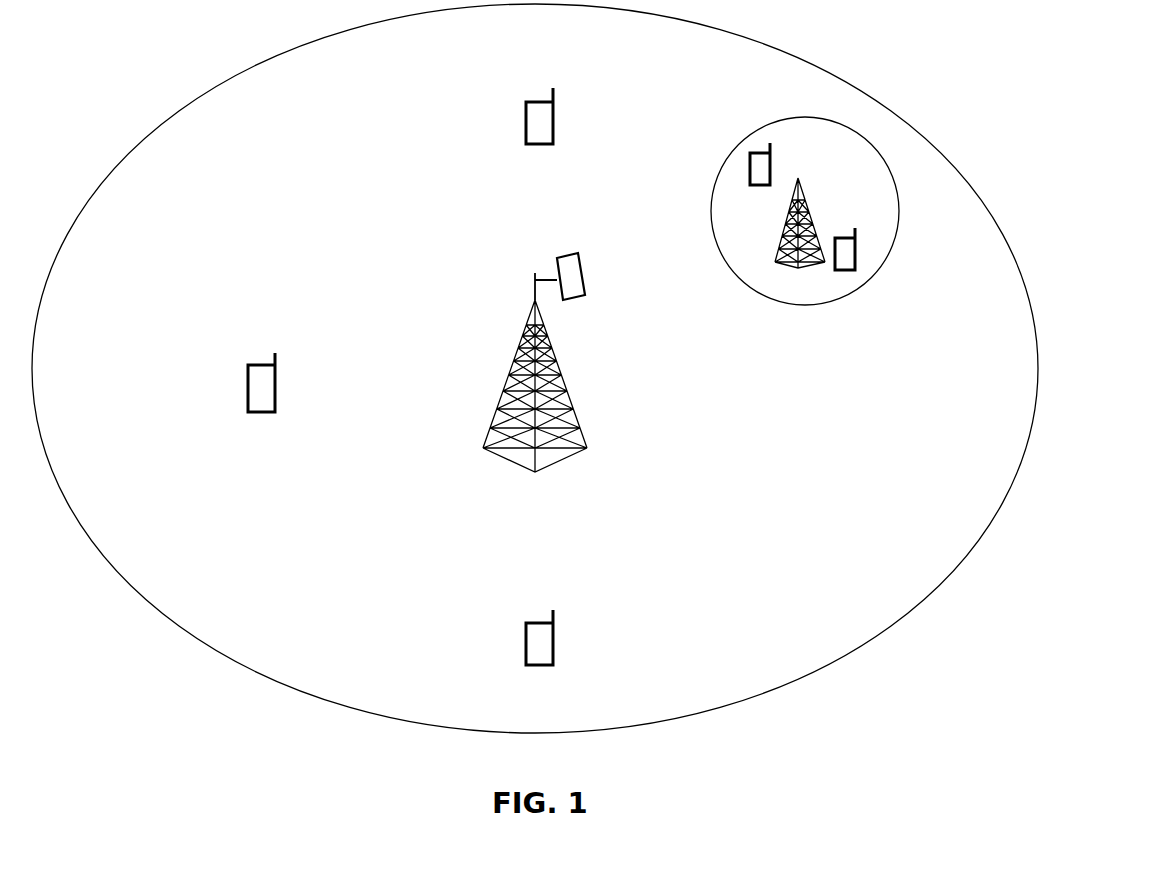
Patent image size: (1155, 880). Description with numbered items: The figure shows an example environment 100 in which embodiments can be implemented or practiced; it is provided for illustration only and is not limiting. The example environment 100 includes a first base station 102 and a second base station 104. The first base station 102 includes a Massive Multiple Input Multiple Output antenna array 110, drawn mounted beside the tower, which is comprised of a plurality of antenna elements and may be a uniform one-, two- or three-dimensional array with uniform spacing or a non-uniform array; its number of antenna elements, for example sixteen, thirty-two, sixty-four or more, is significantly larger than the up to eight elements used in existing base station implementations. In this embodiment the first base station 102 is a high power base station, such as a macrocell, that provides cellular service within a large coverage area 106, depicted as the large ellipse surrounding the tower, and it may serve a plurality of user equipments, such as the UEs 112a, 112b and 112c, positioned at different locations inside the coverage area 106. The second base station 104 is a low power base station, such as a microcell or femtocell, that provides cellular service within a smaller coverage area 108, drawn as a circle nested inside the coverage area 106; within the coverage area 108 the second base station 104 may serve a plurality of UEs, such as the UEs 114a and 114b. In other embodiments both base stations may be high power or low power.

The example environment 100 is at (1126, 31).
The first base station 102 is at (508, 378).
The second base station 104 is at (817, 204).
The coverage area 106 is at (130, 148).
The coverage area 108 is at (828, 306).
The Massive Multiple Input Multiple Output (M-MIMO) antenna array 110 is at (583, 300).
The user equipment 112a is at (247, 388).
The user equipment 112b is at (555, 632).
The user equipment 112c is at (555, 110).
The user equipment 114a is at (772, 160).
The user equipment 114b is at (857, 249).